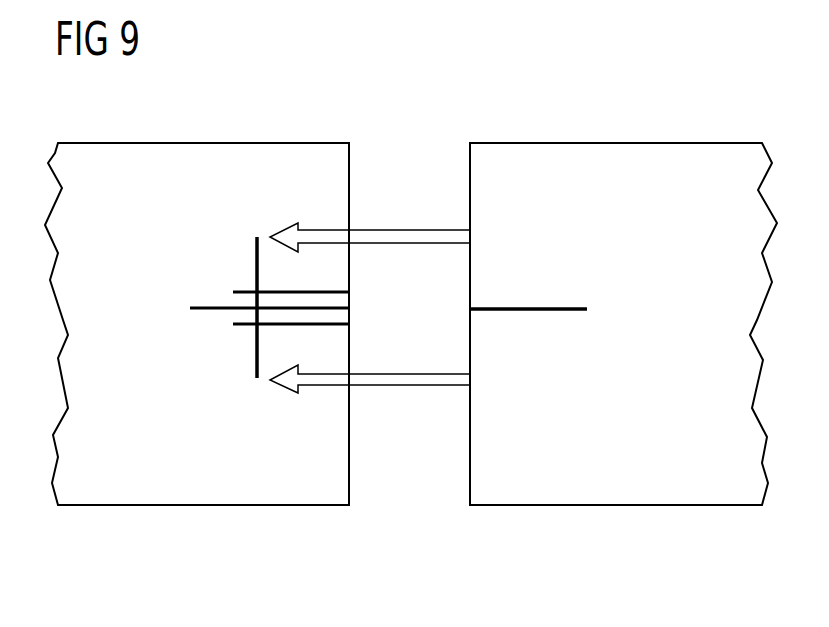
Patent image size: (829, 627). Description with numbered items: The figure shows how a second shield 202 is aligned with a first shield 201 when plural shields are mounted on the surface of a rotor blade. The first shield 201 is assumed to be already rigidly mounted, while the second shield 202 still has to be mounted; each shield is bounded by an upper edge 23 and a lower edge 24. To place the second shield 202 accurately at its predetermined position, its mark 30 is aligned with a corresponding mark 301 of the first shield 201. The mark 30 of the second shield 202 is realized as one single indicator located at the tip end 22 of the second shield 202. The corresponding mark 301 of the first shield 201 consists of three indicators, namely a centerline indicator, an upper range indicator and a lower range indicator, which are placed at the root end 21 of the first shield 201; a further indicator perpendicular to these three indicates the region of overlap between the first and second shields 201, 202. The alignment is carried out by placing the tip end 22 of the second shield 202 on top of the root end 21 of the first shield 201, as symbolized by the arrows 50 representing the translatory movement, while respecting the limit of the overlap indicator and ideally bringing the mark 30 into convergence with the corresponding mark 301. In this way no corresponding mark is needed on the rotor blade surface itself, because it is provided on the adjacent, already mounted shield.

The first shield 201 is at (321, 83).
The second shield 202 is at (633, 83).
The root end 21 is at (349, 163).
The tip end 22 is at (470, 443).
The upper edge 23 is at (223, 143).
The lower edge 24 is at (237, 507).
The mark 30 is at (528, 305).
The arrows 50 is at (407, 245).
The corresponding mark 301 is at (210, 252).